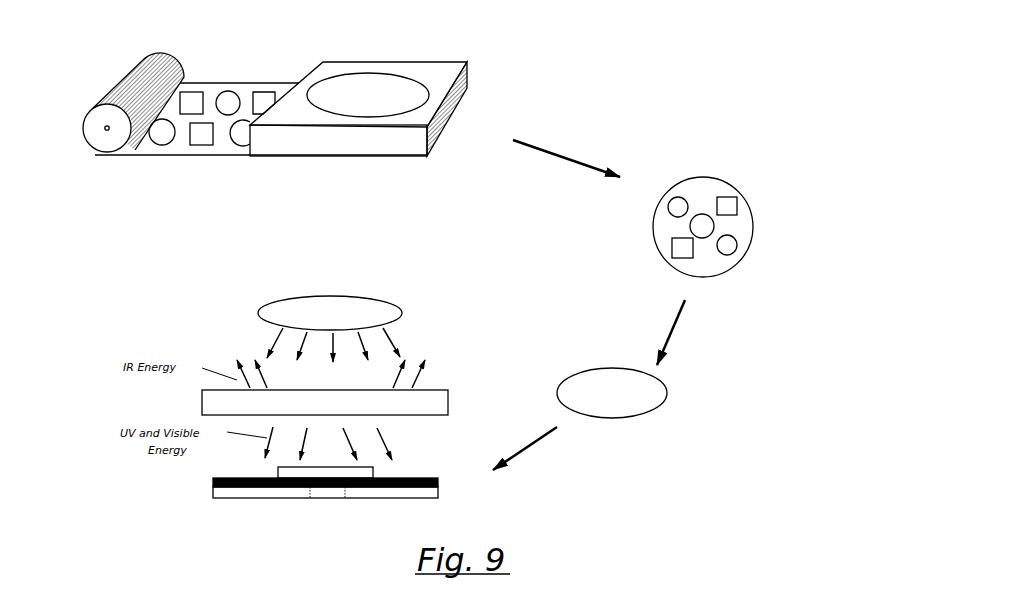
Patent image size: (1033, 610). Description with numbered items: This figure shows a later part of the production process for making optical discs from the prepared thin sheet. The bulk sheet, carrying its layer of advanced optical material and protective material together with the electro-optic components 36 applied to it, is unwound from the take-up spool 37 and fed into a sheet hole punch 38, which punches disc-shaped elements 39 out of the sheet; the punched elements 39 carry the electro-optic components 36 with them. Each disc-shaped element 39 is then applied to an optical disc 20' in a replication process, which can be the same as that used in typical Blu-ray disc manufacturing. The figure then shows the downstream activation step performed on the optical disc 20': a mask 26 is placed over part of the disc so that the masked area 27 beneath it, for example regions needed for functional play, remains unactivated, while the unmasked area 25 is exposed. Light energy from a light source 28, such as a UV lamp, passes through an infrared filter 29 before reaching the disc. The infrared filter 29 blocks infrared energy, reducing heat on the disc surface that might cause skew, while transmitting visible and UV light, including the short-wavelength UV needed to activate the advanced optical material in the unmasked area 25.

The optical disc 20' is at (420, 444).
The unmasked area 25 is at (232, 478).
The mask 26 is at (377, 470).
The masked area 27 is at (355, 481).
The light source 28 is at (392, 310).
The infrared filter 29 is at (440, 400).
The electro-optic components 36 is at (190, 93).
The take-up spool 37 is at (100, 152).
The sheet hole punch 38 is at (338, 156).
The disc-shaped elements 39 is at (703, 187).